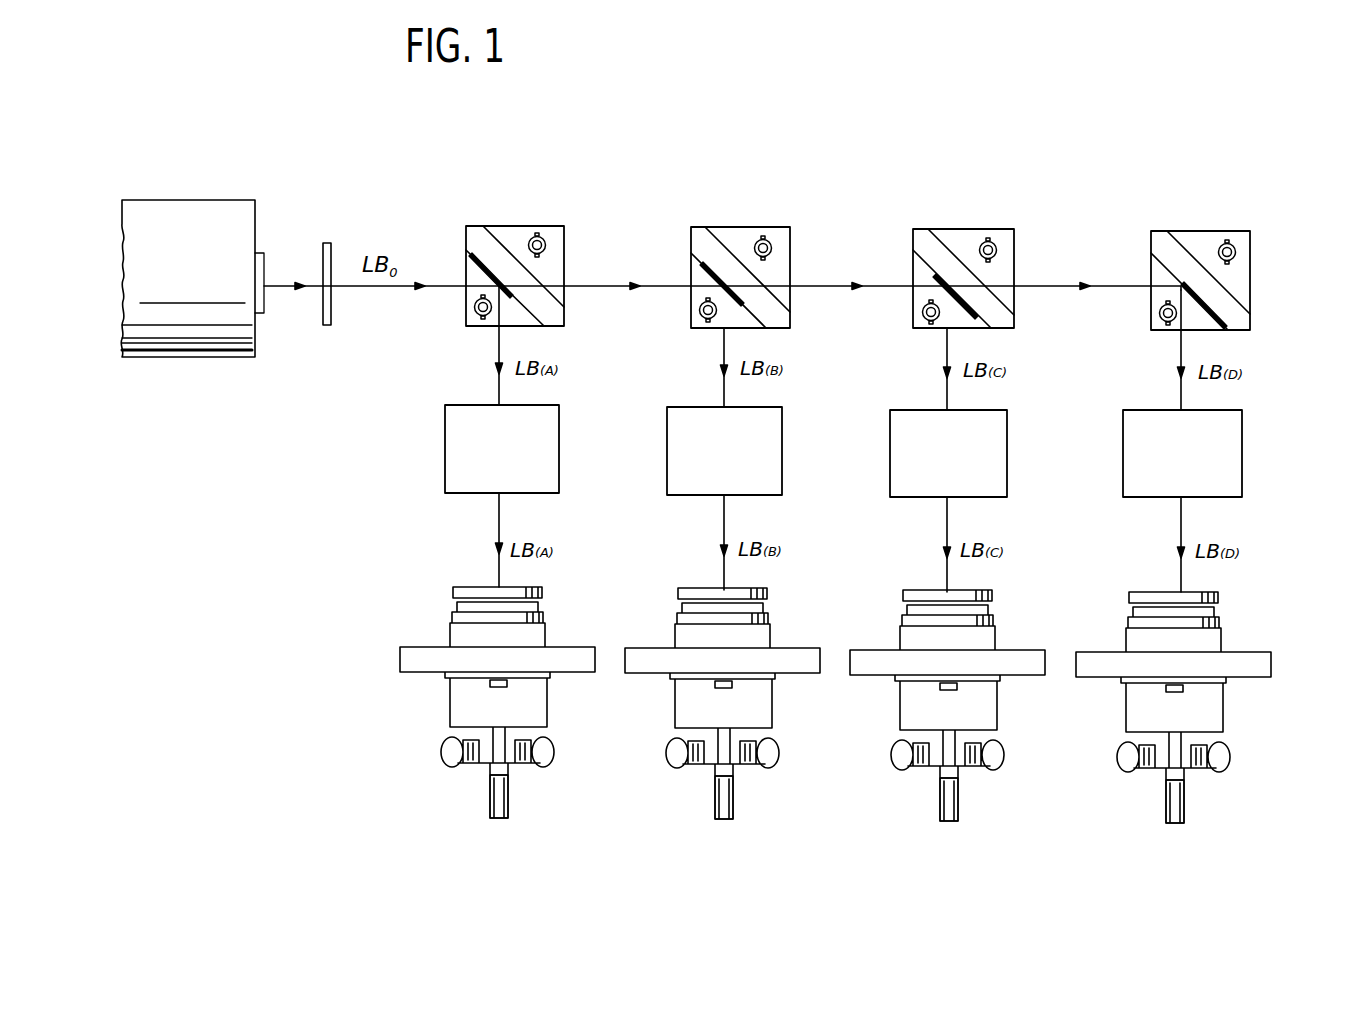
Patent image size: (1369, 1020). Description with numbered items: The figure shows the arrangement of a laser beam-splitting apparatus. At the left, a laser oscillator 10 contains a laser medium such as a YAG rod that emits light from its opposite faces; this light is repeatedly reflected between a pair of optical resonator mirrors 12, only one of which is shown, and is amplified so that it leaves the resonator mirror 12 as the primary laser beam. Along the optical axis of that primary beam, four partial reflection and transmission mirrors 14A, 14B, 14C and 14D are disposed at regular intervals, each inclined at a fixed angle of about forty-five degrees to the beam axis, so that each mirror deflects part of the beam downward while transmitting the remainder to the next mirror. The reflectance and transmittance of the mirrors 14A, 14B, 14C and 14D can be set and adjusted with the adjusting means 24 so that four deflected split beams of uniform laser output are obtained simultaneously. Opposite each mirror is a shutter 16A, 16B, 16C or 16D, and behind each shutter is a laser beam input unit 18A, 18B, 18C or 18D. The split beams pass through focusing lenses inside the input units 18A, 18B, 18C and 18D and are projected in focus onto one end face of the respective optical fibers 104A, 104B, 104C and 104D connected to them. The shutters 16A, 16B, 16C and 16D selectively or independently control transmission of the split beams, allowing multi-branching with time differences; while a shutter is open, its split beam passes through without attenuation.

The laser oscillator 10 is at (220, 200).
The optical resonator mirror 12 is at (328, 243).
The partial reflection and transmission mirror 14A is at (500, 282).
The partial reflection and transmission mirror 14B is at (728, 275).
The partial reflection and transmission mirror 14C is at (953, 282).
The partial reflection and transmission mirror 14D is at (1208, 303).
The adjusting means 24 is at (565, 246).
The shutter 16A is at (559, 432).
The shutter 16B is at (782, 441).
The shutter 16C is at (1007, 444).
The shutter 16D is at (1242, 448).
The laser beam input unit 18A is at (547, 632).
The laser beam input unit 18B is at (772, 633).
The laser beam input unit 18C is at (997, 635).
The laser beam input unit 18D is at (1223, 637).
The optical fiber 104A is at (506, 792).
The optical fiber 104B is at (731, 793).
The optical fiber 104C is at (956, 795).
The optical fiber 104D is at (1182, 797).